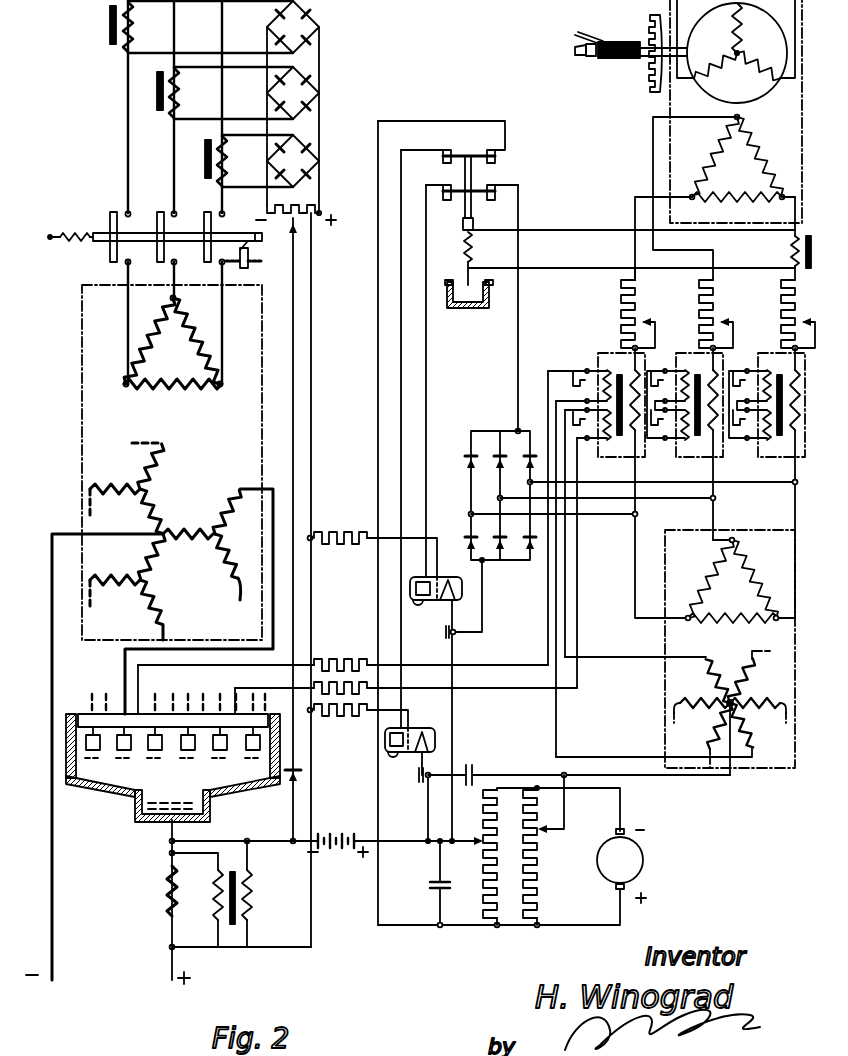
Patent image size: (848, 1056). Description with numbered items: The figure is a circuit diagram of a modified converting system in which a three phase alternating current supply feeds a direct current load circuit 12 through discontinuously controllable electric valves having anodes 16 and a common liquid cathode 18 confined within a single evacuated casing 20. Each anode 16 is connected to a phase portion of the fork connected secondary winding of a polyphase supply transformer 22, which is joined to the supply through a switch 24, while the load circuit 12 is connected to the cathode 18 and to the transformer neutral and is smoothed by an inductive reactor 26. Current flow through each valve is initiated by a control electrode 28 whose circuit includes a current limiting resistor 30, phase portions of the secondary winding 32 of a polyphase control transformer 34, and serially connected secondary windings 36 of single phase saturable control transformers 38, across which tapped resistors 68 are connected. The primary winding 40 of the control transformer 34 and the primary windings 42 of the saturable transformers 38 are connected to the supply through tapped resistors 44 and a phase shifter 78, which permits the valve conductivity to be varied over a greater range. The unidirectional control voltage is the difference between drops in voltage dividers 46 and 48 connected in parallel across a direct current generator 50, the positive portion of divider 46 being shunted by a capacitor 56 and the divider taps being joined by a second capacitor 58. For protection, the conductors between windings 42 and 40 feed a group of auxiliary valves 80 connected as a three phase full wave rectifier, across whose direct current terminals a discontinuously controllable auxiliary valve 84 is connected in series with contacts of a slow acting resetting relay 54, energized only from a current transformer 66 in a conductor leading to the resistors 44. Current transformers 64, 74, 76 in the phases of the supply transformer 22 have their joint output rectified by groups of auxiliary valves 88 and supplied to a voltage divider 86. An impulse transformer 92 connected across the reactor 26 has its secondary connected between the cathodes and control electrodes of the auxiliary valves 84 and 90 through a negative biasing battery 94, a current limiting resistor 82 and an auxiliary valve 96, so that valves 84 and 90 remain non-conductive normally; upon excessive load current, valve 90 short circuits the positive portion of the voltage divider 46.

The direct current load circuit 12 is at (66, 534).
The anodes 16 is at (118, 752).
The common liquid cathode 18 is at (207, 820).
The evacuated casing 20 is at (252, 788).
The polyphase supply transformer 22 is at (82, 372).
The switch 24 is at (106, 260).
The inductive reactor 26 is at (164, 920).
The control electrode 28 is at (133, 754).
The current limiting resistor 30 is at (362, 658).
The polyphase secondary winding 32 is at (704, 740).
The polyphase control transformer 34 is at (792, 772).
The secondary windings 36 is at (630, 454).
The single phase saturable control transformers 38 is at (644, 454).
The primary winding of the control transformer 40 is at (754, 566).
The primary windings of the saturable transformers 42 is at (630, 376).
The resistors 44 is at (622, 303).
The voltage divider 46 is at (480, 856).
The voltage divider 48 is at (537, 858).
The direct current generator 50 is at (643, 862).
The resetting relay 54 is at (474, 253).
The capacitor 56 is at (434, 892).
The second capacitor 58 is at (477, 774).
The current transformer 64 is at (206, 158).
The current transformer 66 is at (792, 256).
The resistors 68 is at (580, 366).
The current transformer 74 is at (165, 90).
The current transformer 76 is at (110, 23).
The phase shifter 78 is at (660, 96).
The auxiliary electric valves 80 is at (465, 456).
The current limiting resistor 82 is at (361, 532).
The discontinuously controllable auxiliary electric valve 84 is at (439, 580).
The voltage divider 86 is at (289, 220).
The auxiliary electric valves 88 is at (312, 81).
The auxiliary electric valve 90 is at (423, 732).
The impulse transformer 92 is at (232, 936).
The battery 94 is at (332, 840).
The auxiliary valve 96 is at (309, 772).